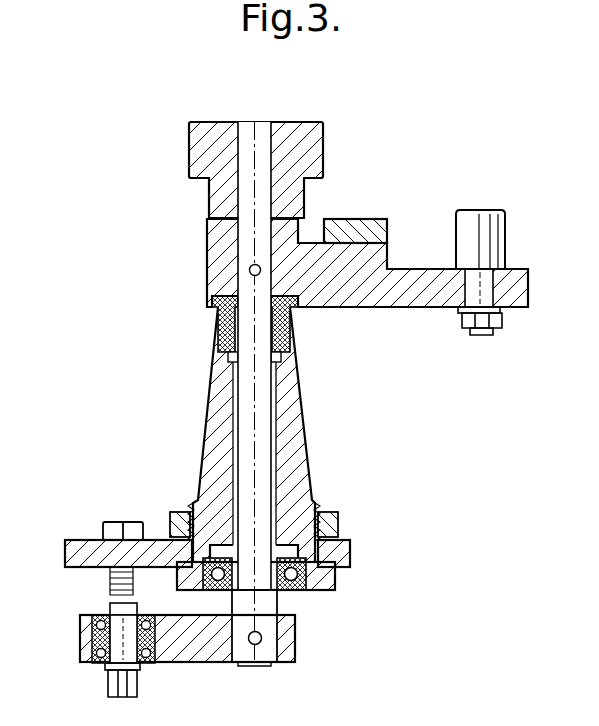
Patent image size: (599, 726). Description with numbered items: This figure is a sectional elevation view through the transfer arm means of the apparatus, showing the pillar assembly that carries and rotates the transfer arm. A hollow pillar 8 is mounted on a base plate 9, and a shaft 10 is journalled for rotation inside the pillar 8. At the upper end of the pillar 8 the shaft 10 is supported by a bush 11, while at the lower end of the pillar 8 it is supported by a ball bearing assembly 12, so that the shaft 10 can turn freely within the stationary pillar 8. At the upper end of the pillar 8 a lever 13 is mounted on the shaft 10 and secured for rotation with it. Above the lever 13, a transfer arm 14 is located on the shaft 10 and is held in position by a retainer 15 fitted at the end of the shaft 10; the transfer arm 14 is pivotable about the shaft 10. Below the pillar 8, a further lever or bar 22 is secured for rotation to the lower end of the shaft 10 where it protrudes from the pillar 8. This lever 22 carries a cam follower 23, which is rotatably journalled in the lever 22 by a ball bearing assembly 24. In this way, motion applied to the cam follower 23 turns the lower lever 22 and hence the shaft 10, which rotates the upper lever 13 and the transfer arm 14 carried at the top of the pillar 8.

The hollow pillar 8 is at (290, 428).
The base plate 9 is at (348, 552).
The shaft 10 is at (250, 378).
The bush 11 is at (215, 318).
The ball bearing assembly 12 is at (308, 583).
The lever 13 is at (355, 258).
The transfer arm 14 is at (339, 220).
The retainer 15 is at (300, 130).
The lever or bar 22 is at (193, 643).
The cam follower 23 is at (110, 682).
The ball bearing assembly 24 is at (92, 625).